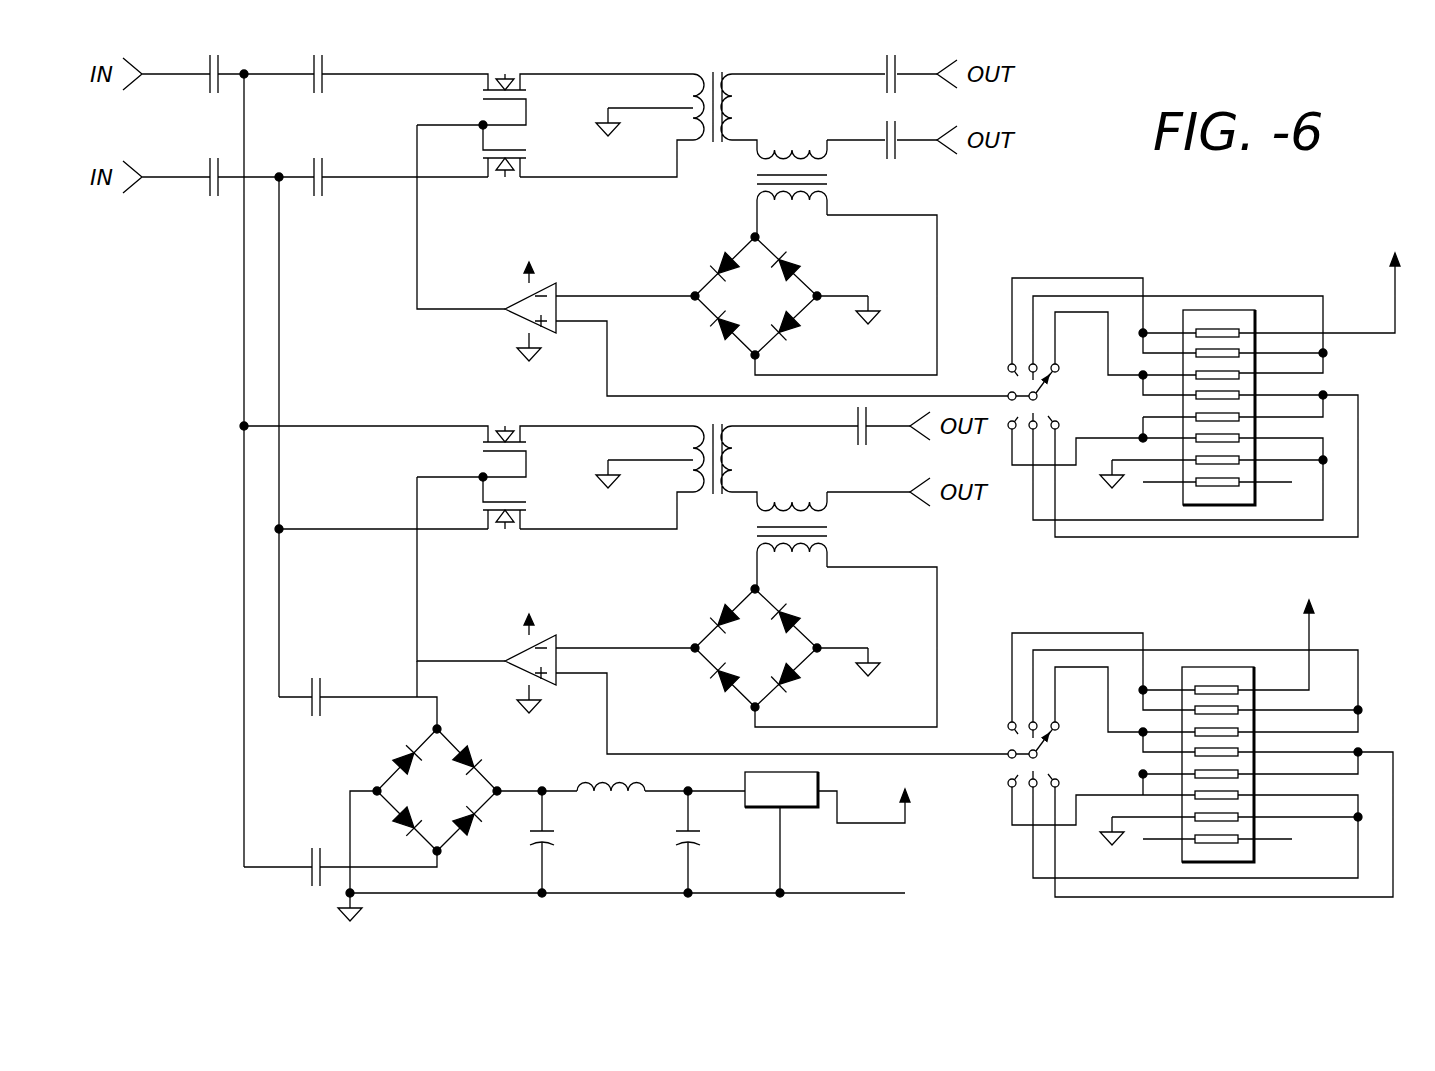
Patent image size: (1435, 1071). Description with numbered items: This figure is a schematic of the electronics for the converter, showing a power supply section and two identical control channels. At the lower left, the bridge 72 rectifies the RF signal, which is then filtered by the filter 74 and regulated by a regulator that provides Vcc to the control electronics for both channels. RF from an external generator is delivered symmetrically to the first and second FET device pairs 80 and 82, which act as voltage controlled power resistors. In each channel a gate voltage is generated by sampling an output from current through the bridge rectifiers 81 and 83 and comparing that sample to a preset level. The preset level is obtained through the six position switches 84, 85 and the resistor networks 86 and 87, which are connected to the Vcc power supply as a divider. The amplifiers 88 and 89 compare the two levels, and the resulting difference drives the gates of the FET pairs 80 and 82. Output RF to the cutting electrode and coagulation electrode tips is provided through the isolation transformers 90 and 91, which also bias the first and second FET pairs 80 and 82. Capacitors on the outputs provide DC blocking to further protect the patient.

The bridge 72 is at (458, 727).
The filter 74 is at (608, 905).
The first FET device pair 80 is at (490, 62).
The bridge rectifier 81 is at (815, 260).
The second FET device pair 82 is at (493, 410).
The bridge rectifier 83 is at (815, 613).
The six position switch 84 is at (1073, 252).
The six position switch 85 is at (1045, 607).
The resistor network 86 is at (1218, 283).
The resistor network 87 is at (1218, 632).
The amplifier 88 is at (512, 292).
The amplifier 89 is at (512, 647).
The isolation transformer 90 is at (740, 62).
The isolation transformer 91 is at (760, 506).